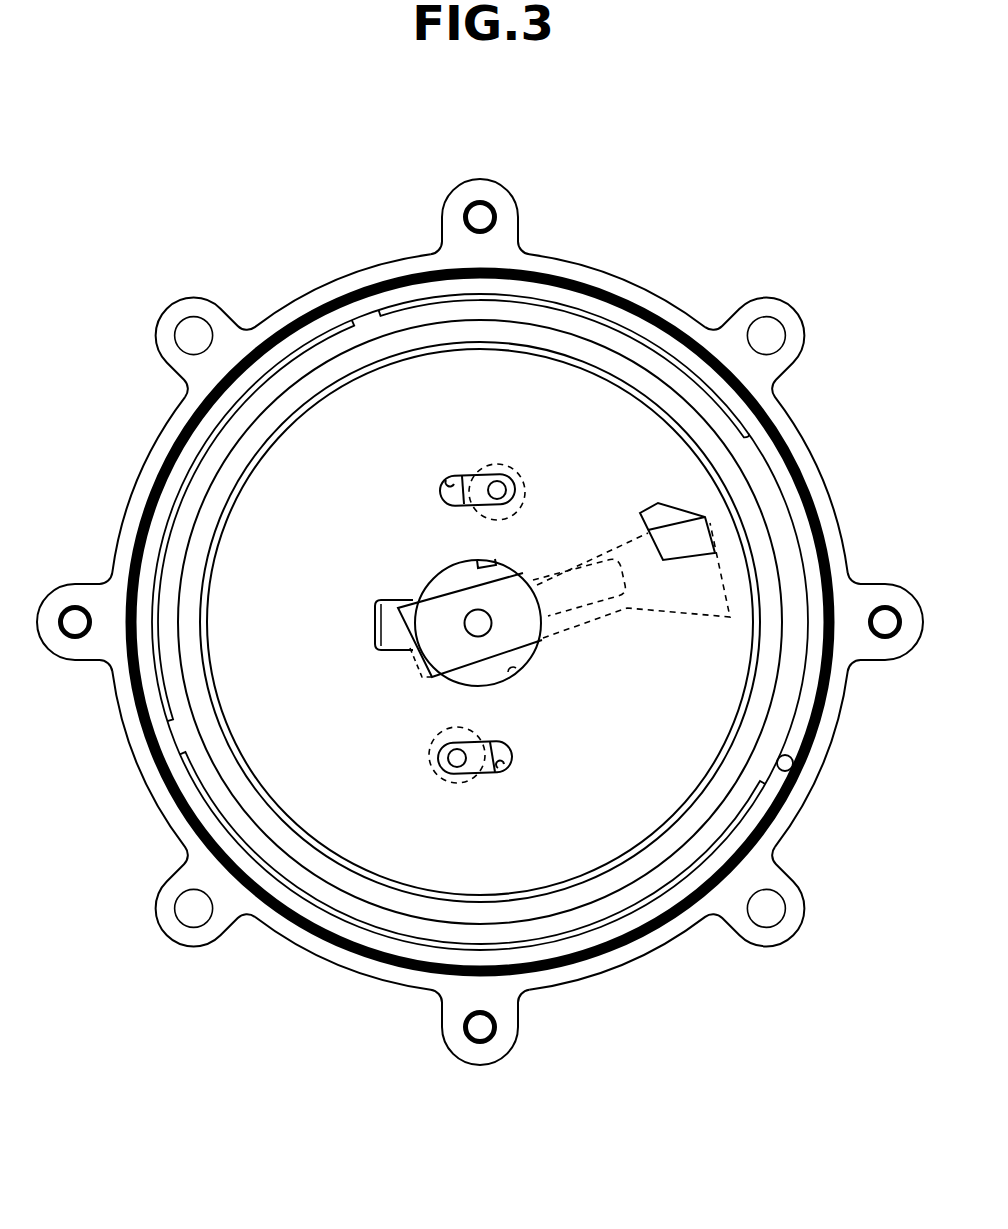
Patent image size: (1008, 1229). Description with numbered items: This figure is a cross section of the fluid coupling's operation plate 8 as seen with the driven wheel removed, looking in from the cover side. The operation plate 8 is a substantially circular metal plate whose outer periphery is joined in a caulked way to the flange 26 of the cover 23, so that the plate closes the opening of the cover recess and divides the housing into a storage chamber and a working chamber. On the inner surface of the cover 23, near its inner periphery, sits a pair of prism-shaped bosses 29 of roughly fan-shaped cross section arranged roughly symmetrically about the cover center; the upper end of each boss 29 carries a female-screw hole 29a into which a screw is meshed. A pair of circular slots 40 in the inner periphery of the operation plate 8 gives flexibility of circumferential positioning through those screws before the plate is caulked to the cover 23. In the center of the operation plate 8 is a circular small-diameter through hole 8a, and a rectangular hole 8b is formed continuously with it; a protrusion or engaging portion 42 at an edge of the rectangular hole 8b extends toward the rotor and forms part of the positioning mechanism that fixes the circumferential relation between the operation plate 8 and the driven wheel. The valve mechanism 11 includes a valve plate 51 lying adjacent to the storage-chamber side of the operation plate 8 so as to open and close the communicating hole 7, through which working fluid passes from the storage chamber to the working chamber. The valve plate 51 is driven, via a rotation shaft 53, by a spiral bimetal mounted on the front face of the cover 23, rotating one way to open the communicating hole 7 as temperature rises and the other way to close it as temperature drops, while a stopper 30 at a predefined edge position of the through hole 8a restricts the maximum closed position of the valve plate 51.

The communicating hole 7 is at (668, 515).
The operation plate 8 is at (607, 835).
The through hole 8a is at (513, 672).
The rectangular hole 8b is at (384, 652).
The valve mechanism 11 is at (582, 636).
The cover 23 is at (835, 753).
The flange 26 is at (703, 808).
The boss 29 is at (488, 468).
The female-screw hole 29a is at (498, 488).
The stopper 30 is at (493, 562).
The circular slot 40 is at (450, 483).
The engaging portion 42 is at (376, 618).
The valve plate 51 is at (542, 640).
The rotation shaft 53 is at (475, 622).